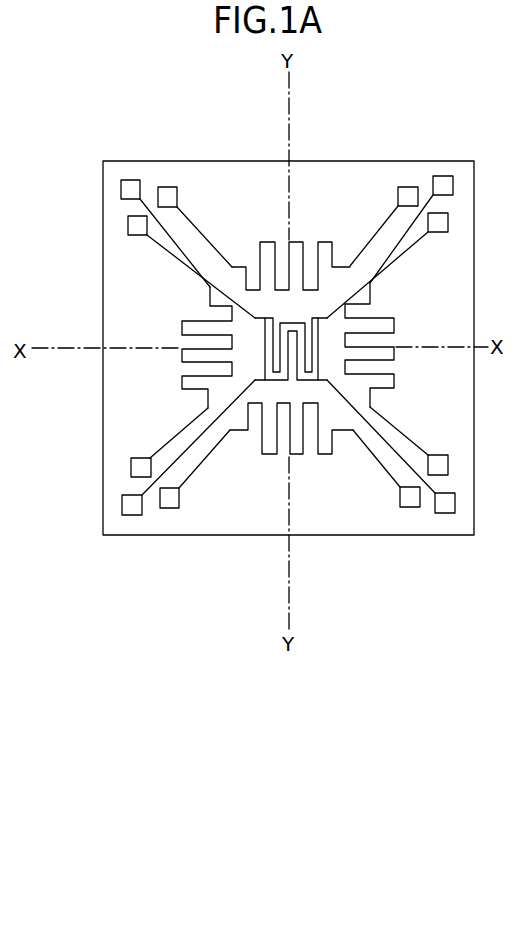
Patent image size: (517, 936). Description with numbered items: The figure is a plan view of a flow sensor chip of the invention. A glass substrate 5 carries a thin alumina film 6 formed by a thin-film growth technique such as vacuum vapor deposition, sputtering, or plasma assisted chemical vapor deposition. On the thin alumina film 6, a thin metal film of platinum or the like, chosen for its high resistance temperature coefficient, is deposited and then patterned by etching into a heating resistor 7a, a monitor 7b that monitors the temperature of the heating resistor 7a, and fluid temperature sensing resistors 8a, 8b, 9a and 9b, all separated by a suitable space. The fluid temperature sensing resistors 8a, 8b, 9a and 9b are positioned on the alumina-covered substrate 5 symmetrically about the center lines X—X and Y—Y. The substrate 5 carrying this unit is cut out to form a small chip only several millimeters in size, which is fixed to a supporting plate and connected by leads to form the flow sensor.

The glass substrate 5 is at (288, 323).
The thin alumina film 6 is at (268, 170).
The heating resistor 7a is at (130, 180).
The monitor 7b is at (133, 515).
The fluid temperature sensing resistor 8a is at (135, 227).
The fluid temperature sensing resistor 8b is at (448, 221).
The fluid temperature sensing resistor 9a is at (410, 187).
The fluid temperature sensing resistor 9b is at (170, 503).